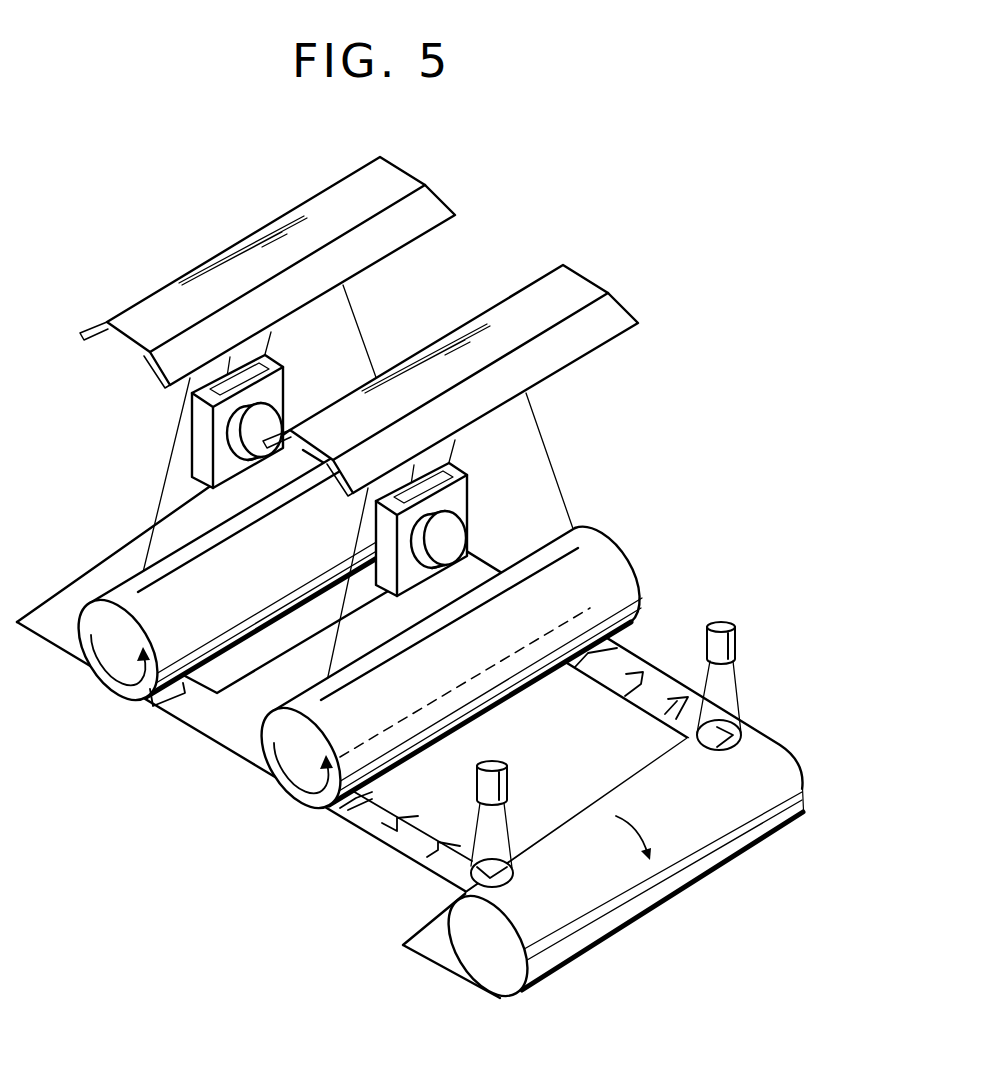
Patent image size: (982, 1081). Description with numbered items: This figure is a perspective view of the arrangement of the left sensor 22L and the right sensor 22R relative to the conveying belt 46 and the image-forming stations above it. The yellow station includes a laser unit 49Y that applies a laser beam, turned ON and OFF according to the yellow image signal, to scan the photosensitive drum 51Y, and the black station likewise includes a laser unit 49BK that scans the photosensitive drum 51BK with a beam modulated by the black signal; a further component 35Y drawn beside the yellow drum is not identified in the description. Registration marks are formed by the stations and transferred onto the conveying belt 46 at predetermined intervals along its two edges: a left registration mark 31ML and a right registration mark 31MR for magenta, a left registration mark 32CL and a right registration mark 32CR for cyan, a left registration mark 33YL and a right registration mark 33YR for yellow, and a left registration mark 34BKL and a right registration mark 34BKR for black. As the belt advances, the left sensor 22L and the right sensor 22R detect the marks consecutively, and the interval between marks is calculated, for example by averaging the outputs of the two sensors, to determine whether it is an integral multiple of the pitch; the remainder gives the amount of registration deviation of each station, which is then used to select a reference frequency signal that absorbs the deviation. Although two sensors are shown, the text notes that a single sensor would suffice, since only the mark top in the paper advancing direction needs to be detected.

The conveying belt 46 is at (658, 908).
The photosensitive drum 51Y is at (80, 653).
The photosensitive drum 51BK is at (606, 540).
The laser unit 49Y is at (275, 360).
The laser unit 49BK is at (468, 470).
The yellow drum cleaner 35Y is at (173, 692).
The right sensor 22R is at (509, 781).
The left sensor 22L is at (737, 645).
The right registration mark for magenta 31MR is at (512, 878).
The left registration mark for magenta 31ML is at (728, 750).
The right registration mark for cyan 32CR is at (417, 863).
The left registration mark for cyan 32CL is at (670, 703).
The right registration mark for yellow 33YR is at (383, 842).
The left registration mark for yellow 33YL is at (638, 677).
The right registration mark for black 34BKR is at (350, 812).
The left registration mark for black 34BKL is at (620, 646).